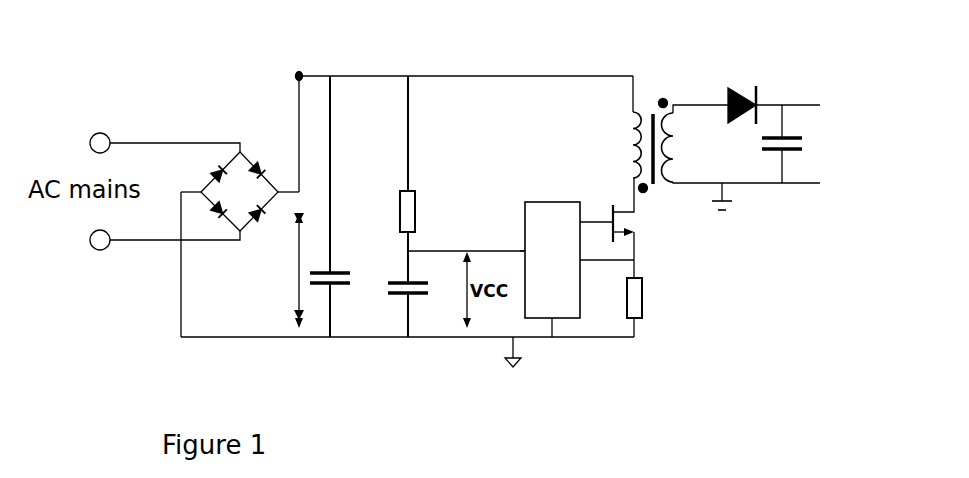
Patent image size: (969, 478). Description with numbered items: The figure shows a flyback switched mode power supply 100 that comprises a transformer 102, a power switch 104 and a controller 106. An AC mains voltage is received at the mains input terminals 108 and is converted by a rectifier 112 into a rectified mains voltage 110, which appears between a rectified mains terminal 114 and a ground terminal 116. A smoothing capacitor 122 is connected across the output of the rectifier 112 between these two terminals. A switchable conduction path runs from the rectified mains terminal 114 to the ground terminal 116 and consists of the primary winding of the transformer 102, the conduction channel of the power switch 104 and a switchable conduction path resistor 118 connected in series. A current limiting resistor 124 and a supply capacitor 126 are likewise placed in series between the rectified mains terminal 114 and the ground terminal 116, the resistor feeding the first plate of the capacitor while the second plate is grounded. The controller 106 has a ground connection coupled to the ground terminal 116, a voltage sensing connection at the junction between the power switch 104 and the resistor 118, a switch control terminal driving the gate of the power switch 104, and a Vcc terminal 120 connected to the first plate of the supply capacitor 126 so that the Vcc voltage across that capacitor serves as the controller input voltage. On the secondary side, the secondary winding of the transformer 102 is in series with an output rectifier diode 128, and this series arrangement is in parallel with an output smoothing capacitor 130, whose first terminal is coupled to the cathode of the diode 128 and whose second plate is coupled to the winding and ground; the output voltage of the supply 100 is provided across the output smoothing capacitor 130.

The flyback switched mode power supply 100 is at (186, 49).
The transformer 102 is at (660, 76).
The power switch 104 is at (645, 245).
The controller 106 is at (552, 202).
The mains input terminals 108 is at (111, 134).
The rectified mains voltage 110 is at (284, 270).
The rectifier 112 is at (233, 136).
The rectified mains terminal 114 is at (297, 74).
The ground terminal 116 is at (516, 373).
The switchable conduction path resistor 118 is at (642, 300).
The Vcc terminal 120 is at (523, 250).
The smoothing capacitor 122 is at (338, 286).
The current limiting resistor 124 is at (398, 212).
The supply capacitor 126 is at (392, 296).
The output rectifier diode 128 is at (754, 100).
The output smoothing capacitor 130 is at (789, 121).